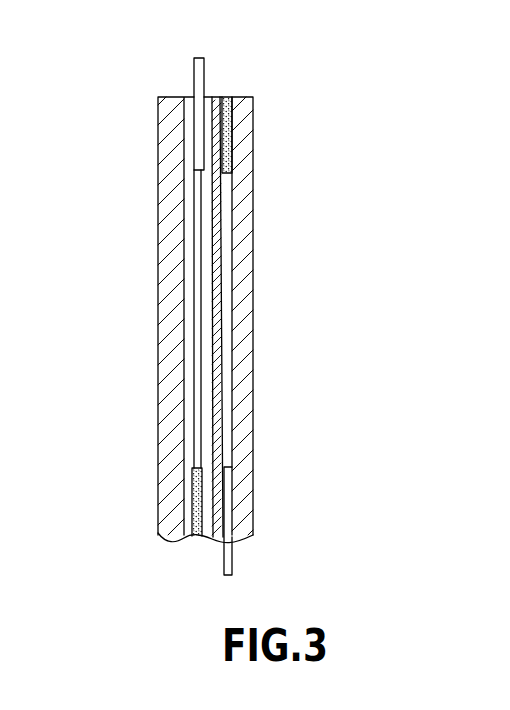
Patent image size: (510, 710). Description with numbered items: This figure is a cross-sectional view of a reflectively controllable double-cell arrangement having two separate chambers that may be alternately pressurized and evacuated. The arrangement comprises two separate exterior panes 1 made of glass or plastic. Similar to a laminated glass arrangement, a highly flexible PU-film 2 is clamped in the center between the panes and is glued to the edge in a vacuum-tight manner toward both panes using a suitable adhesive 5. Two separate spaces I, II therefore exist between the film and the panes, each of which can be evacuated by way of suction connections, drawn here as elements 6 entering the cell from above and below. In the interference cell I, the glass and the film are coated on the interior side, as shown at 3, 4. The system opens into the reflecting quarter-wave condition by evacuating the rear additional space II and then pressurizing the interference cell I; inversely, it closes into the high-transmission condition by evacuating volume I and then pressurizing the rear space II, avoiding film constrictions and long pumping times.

The exterior pane 1 is at (163, 285).
The PU-film 2 is at (214, 208).
The coating 3 is at (189, 403).
The coating 4 is at (207, 420).
The adhesive 5 is at (228, 136).
The electrode wire 6 is at (199, 92).
The interference cell I is at (197, 333).
The rear additional space II is at (226, 313).